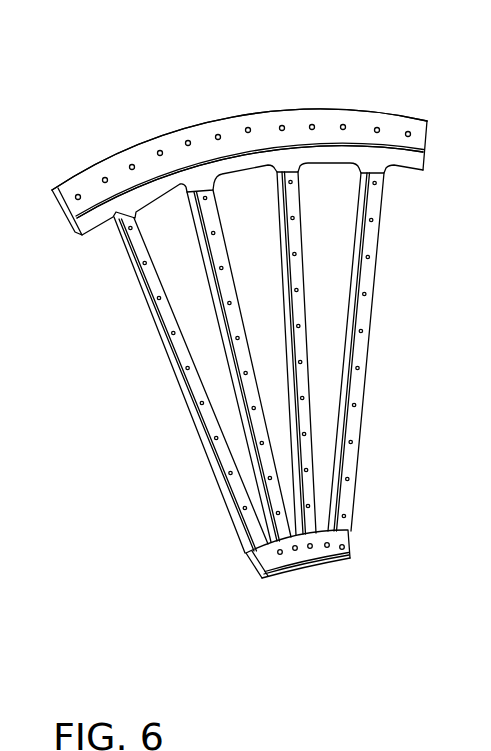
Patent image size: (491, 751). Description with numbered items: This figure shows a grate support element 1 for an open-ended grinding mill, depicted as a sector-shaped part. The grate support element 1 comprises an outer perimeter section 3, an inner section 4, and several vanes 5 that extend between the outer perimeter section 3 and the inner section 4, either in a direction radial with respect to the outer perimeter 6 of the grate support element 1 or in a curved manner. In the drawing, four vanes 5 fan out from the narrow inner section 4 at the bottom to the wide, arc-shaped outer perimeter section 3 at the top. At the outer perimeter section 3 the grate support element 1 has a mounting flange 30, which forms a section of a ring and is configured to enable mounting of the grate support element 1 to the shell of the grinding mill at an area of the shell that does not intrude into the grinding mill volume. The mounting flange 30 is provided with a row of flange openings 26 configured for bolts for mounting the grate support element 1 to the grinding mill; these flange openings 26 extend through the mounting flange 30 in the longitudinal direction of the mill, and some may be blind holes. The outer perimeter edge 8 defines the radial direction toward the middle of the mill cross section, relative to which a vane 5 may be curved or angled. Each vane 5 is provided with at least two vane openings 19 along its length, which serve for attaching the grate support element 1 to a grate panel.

The grate support element 1 is at (274, 97).
The outer perimeter section 3 is at (367, 118).
The inner section 4 is at (268, 557).
The vane 5 is at (192, 382).
The outer perimeter 6 is at (52, 190).
The outer perimeter edge 8 is at (155, 133).
The vane opening 19 is at (372, 221).
The flange opening 26 is at (345, 124).
The mounting flange 30 is at (232, 140).